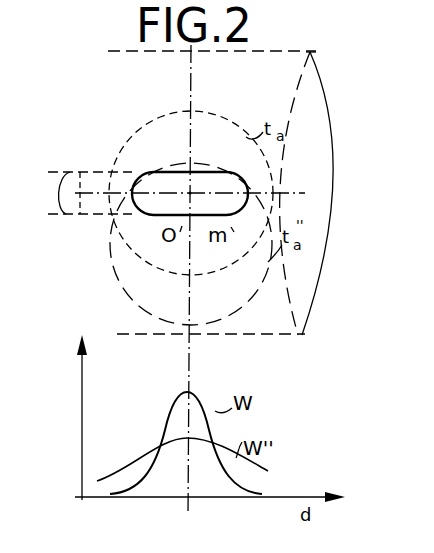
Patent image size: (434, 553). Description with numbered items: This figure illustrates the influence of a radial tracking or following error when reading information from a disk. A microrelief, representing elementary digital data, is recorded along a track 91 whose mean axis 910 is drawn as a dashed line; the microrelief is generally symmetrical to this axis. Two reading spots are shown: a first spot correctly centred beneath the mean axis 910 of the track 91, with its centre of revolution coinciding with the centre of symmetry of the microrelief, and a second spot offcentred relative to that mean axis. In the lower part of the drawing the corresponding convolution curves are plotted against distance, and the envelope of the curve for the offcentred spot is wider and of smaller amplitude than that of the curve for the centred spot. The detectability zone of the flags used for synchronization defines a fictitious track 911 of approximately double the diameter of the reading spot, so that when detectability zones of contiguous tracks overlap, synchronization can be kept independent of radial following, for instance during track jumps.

The track 91 is at (66, 214).
The mean axis 910 is at (280, 190).
The fictitious track 911 is at (302, 335).